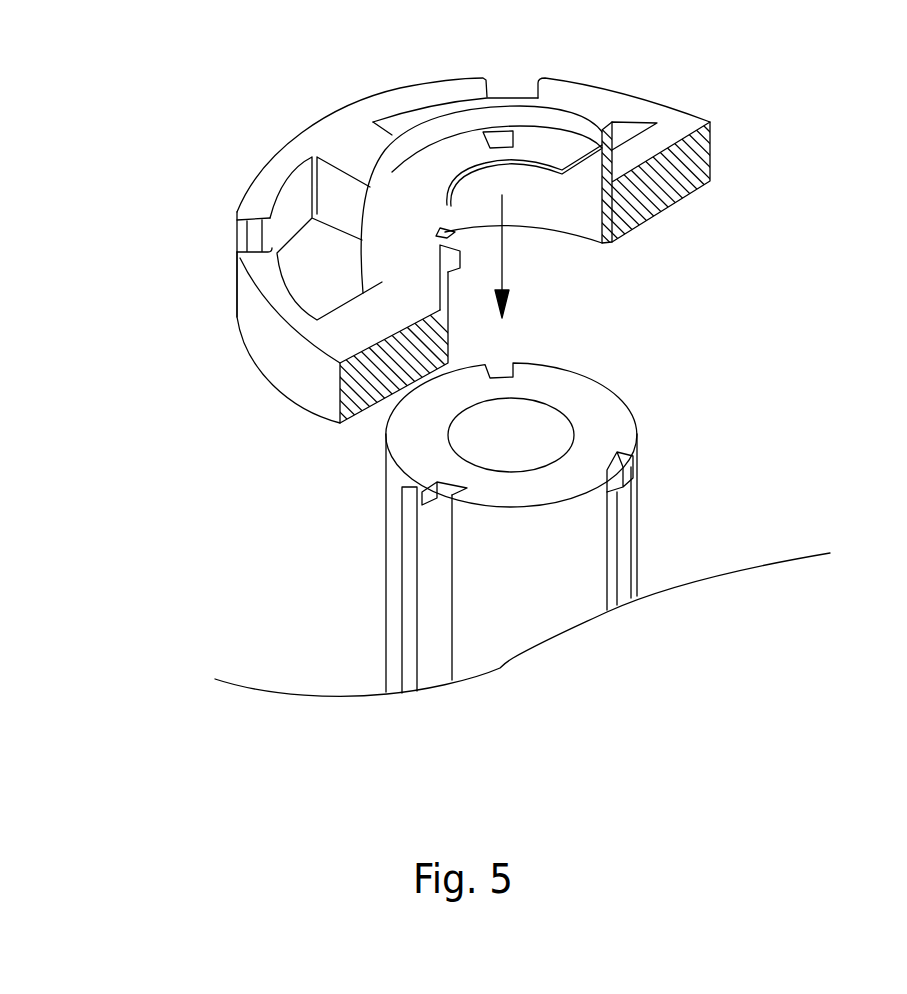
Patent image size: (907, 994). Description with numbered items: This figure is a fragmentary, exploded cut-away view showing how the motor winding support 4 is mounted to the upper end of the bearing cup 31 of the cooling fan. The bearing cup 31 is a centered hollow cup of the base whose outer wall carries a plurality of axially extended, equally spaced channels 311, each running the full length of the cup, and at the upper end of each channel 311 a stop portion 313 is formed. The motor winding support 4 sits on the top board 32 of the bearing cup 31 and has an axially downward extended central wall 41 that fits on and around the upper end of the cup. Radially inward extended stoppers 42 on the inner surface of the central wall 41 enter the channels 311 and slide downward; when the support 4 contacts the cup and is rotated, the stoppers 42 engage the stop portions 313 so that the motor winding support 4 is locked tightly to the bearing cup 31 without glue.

The motor winding support 4 is at (457, 246).
The central wall 41 is at (447, 335).
The radial stopper 42 is at (450, 276).
The top board 32 is at (560, 153).
The bearing cup 31 is at (497, 511).
The channel 311 is at (438, 568).
The stop portion 313 is at (422, 490).